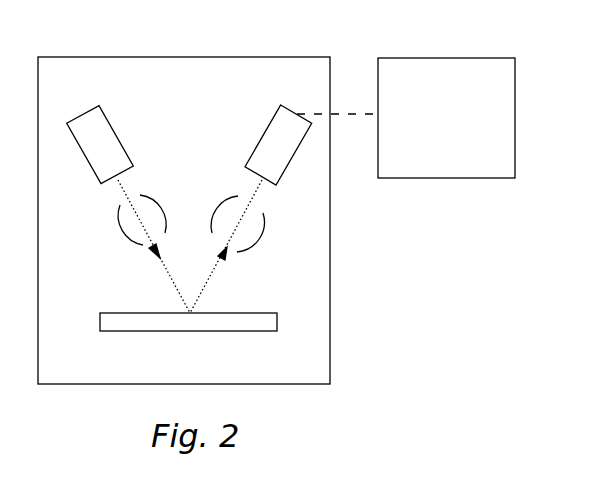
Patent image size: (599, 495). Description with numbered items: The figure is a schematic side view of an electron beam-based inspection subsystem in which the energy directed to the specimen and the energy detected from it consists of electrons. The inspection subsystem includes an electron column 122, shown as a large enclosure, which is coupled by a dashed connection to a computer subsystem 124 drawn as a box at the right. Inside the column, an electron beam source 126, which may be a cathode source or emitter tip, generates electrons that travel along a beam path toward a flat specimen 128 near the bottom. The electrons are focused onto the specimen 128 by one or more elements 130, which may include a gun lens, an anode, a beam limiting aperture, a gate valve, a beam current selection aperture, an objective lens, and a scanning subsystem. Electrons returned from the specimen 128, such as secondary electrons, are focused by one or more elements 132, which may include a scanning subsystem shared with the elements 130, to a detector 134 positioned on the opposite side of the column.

The electron column 122 is at (172, 56).
The computer subsystem 124 is at (467, 157).
The electron beam source 126 is at (107, 117).
The specimen 128 is at (233, 312).
The one or more elements 130 is at (128, 240).
The one or more elements 132 is at (260, 238).
The detector 134 is at (274, 122).